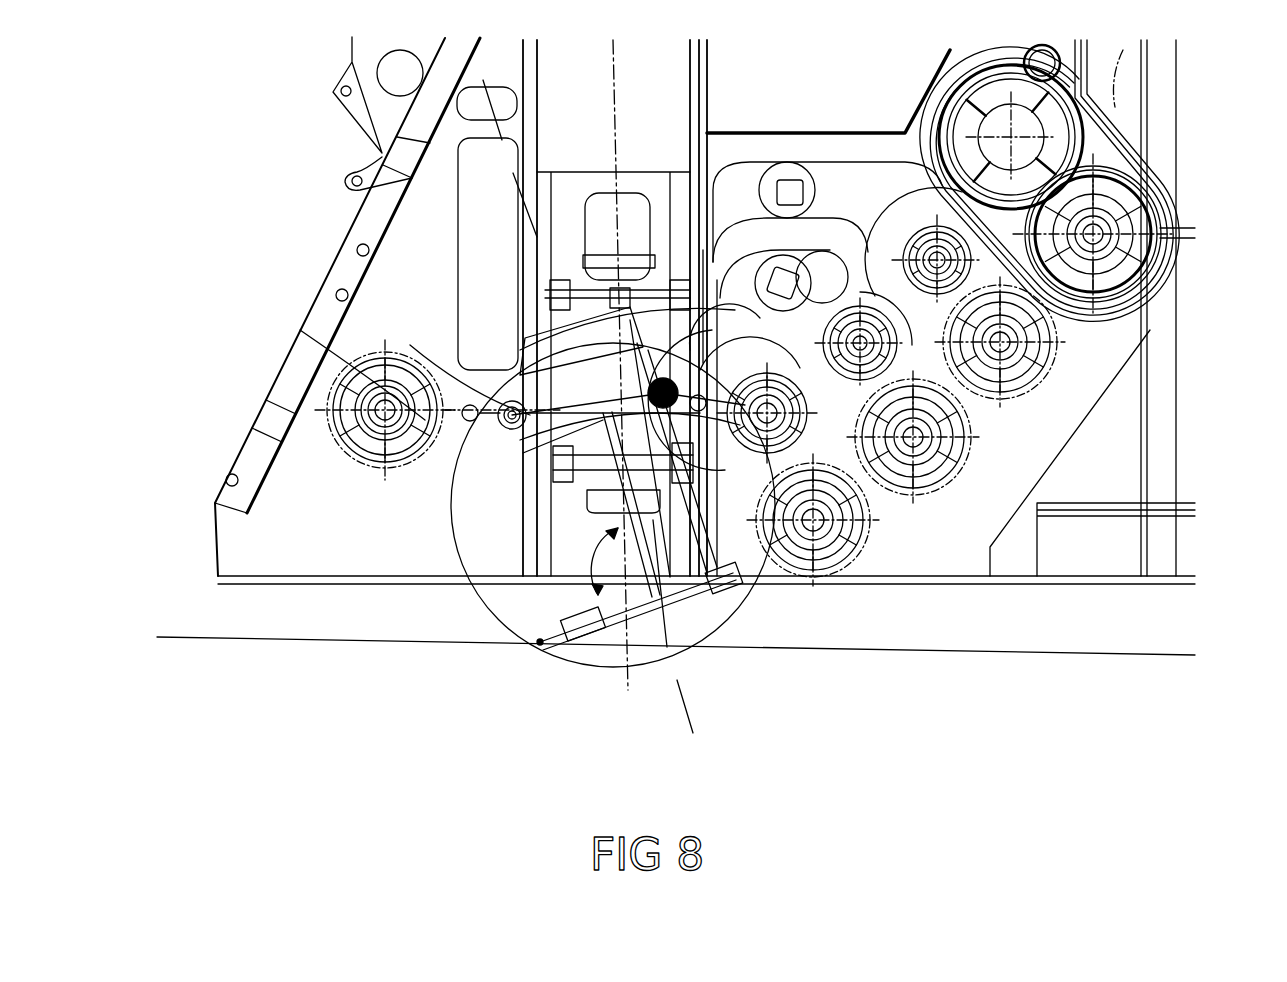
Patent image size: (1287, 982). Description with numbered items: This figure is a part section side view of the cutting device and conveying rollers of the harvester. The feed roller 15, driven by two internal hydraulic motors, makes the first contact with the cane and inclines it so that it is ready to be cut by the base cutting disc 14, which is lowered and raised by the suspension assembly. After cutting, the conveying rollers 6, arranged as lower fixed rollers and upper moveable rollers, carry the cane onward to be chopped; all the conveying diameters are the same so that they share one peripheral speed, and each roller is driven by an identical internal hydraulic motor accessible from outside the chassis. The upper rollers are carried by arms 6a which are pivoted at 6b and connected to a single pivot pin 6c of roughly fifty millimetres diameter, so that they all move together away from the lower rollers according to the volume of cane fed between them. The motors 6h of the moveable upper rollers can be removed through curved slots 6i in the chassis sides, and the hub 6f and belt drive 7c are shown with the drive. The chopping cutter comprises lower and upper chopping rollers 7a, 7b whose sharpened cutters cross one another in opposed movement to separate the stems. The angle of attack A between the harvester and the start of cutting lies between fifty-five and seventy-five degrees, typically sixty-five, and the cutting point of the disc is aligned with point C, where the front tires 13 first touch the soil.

The conveying rollers 6 is at (890, 348).
The arms 6a is at (850, 160).
The pivot 6b is at (787, 183).
The single pivot pin 6c is at (540, 430).
The gear hub 6f is at (930, 440).
The motors 6h is at (928, 252).
The curved slots 6i is at (838, 250).
The lower chopping roller 7a is at (1165, 255).
The upper chopping roller 7b is at (950, 120).
The belt 7c is at (1117, 137).
The front tires 13 is at (533, 648).
The base cutting disc 14 is at (740, 587).
The feed roller 15 is at (350, 387).
The angle of attack A is at (595, 552).
The point of first tire contact C is at (540, 642).